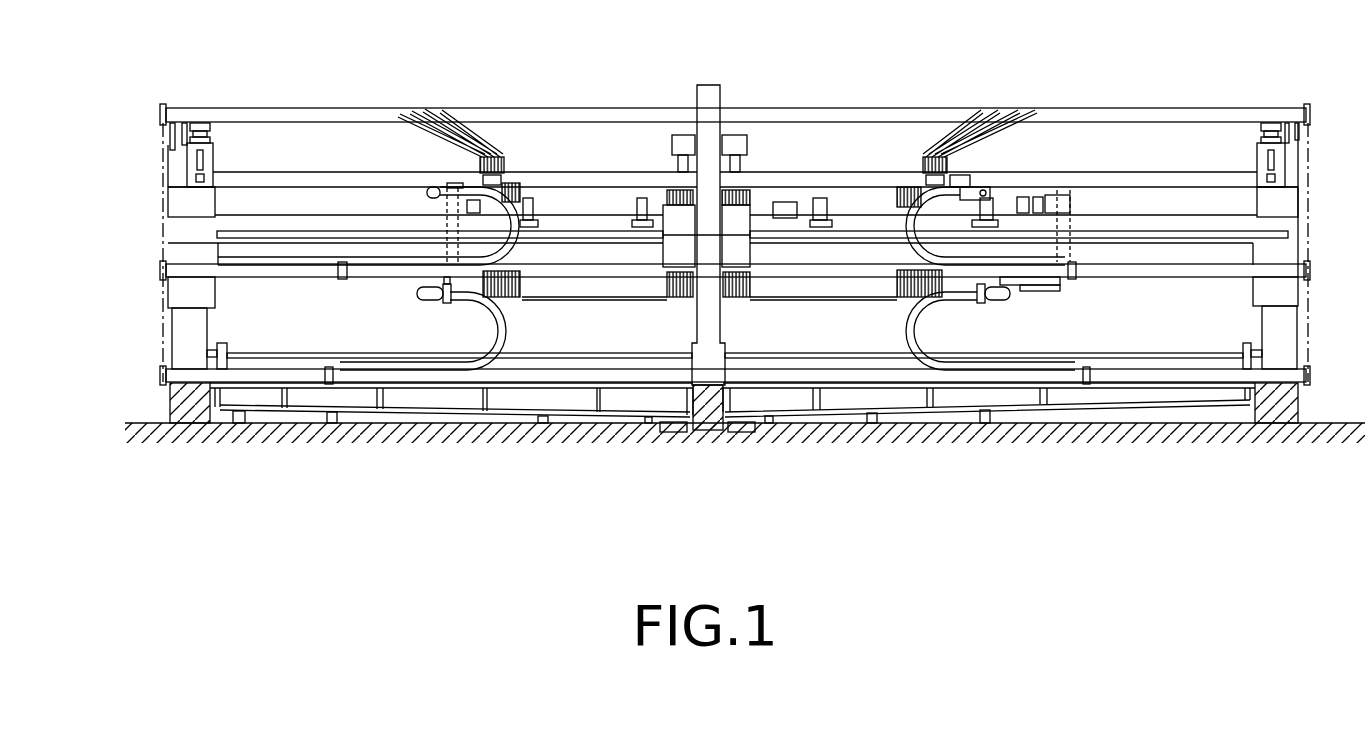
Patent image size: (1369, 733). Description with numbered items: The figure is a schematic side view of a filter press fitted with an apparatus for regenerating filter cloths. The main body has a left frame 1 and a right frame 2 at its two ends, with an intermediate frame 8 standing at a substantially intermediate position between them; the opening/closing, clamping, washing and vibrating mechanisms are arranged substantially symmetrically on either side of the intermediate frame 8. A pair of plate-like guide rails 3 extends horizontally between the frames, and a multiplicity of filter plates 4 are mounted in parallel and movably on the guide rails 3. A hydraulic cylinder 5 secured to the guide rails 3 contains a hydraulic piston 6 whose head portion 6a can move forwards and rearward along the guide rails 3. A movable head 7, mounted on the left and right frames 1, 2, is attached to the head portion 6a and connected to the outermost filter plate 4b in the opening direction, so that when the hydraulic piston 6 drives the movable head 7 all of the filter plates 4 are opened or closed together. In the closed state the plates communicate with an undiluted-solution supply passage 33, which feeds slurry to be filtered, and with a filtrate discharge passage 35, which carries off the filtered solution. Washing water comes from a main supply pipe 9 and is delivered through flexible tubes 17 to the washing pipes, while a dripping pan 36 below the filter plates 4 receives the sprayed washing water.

The left frame 1 is at (190, 212).
The right frame 2 is at (1275, 212).
The guide rails 3 is at (185, 250).
The filter plates 4 is at (517, 297).
The outermost filter plate 4b is at (470, 295).
The hydraulic cylinder 5 is at (592, 212).
The hydraulic piston 6 is at (455, 243).
The head portion 6a is at (463, 180).
The movable head 7 is at (433, 210).
The intermediate frame 8 is at (709, 85).
The main supply pipe 9 is at (362, 116).
The tube 17 is at (484, 150).
The undiluted-solution supply passage 33 is at (547, 262).
The filtrate discharge passage 35 is at (503, 347).
The dripping pan 36 is at (425, 400).